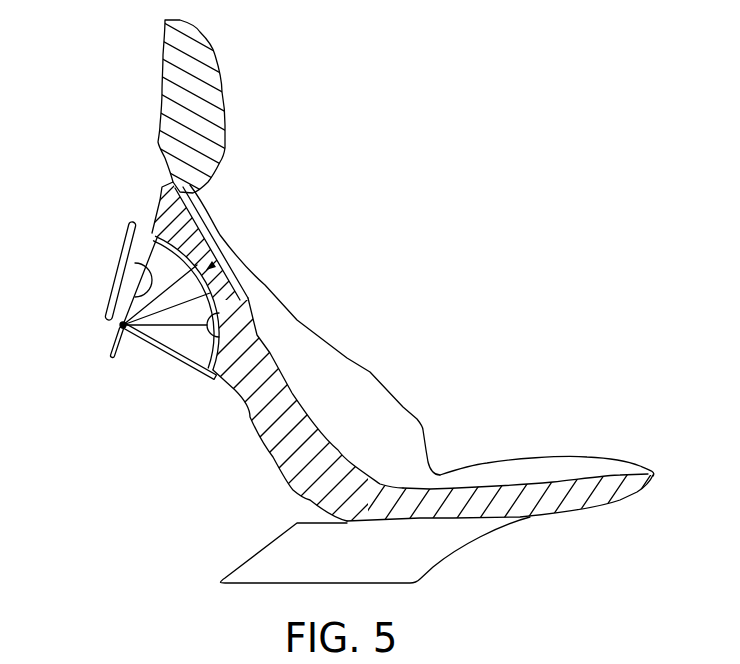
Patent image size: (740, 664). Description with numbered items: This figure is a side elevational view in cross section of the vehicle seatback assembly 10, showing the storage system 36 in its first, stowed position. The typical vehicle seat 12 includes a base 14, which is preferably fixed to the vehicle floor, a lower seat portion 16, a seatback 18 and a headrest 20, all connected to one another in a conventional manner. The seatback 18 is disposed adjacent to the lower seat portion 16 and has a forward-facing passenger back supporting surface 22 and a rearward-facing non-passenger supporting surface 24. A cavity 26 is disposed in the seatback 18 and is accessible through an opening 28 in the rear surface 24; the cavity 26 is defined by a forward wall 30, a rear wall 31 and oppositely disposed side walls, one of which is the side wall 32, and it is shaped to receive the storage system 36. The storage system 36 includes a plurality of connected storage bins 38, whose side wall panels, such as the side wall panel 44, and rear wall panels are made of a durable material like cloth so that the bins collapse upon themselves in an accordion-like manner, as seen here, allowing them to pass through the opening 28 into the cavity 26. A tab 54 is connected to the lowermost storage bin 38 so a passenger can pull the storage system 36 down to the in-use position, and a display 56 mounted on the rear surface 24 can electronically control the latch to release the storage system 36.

The vehicle seatback assembly 10 is at (349, 233).
The vehicle seat 12 is at (301, 314).
The base 14 is at (250, 552).
The lower seat portion 16 is at (567, 453).
The seatback 18 is at (294, 486).
The headrest 20 is at (221, 78).
The passenger back supporting surface 22 is at (371, 371).
The non-passenger supporting surface 24 is at (262, 438).
The cavity 26 is at (193, 342).
The opening 28 is at (228, 351).
The forward wall 30 is at (224, 292).
The rear wall 31 is at (147, 265).
The side wall 32 is at (156, 343).
The storage system 36 is at (210, 268).
The storage bin 38 is at (201, 231).
The side wall panel 44 is at (162, 262).
The tab 54 is at (110, 342).
The display 56 is at (110, 300).